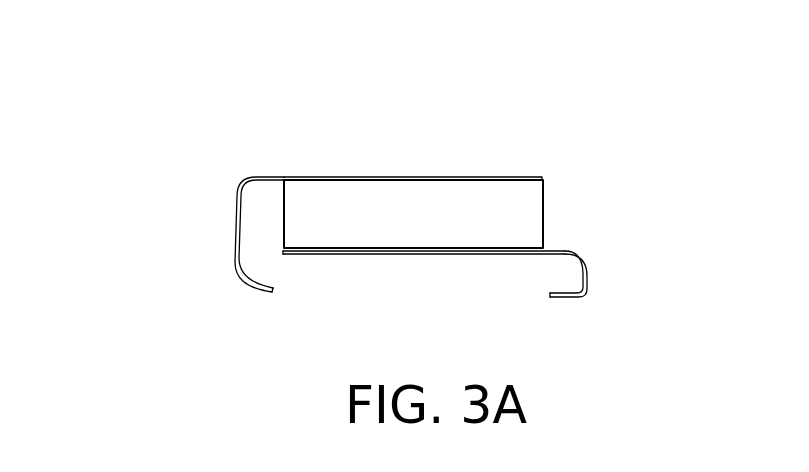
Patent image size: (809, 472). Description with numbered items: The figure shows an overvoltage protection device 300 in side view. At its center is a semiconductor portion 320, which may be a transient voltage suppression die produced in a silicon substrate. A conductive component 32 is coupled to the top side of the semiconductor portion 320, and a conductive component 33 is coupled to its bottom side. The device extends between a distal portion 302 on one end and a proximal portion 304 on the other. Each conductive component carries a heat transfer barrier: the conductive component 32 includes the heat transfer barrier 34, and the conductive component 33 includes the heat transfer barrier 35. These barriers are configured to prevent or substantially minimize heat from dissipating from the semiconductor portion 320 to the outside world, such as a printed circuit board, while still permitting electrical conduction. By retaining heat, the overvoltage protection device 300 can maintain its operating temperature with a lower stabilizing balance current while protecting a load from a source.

The overvoltage protection device 300 is at (327, 127).
The distal portion 302 is at (622, 179).
The proximal portion 304 is at (185, 133).
The conductive component 32 is at (414, 164).
The conductive component 33 is at (389, 266).
The heat transfer barrier 34 is at (206, 222).
The heat transfer barrier 35 is at (606, 264).
The semiconductor portion 320 is at (430, 225).